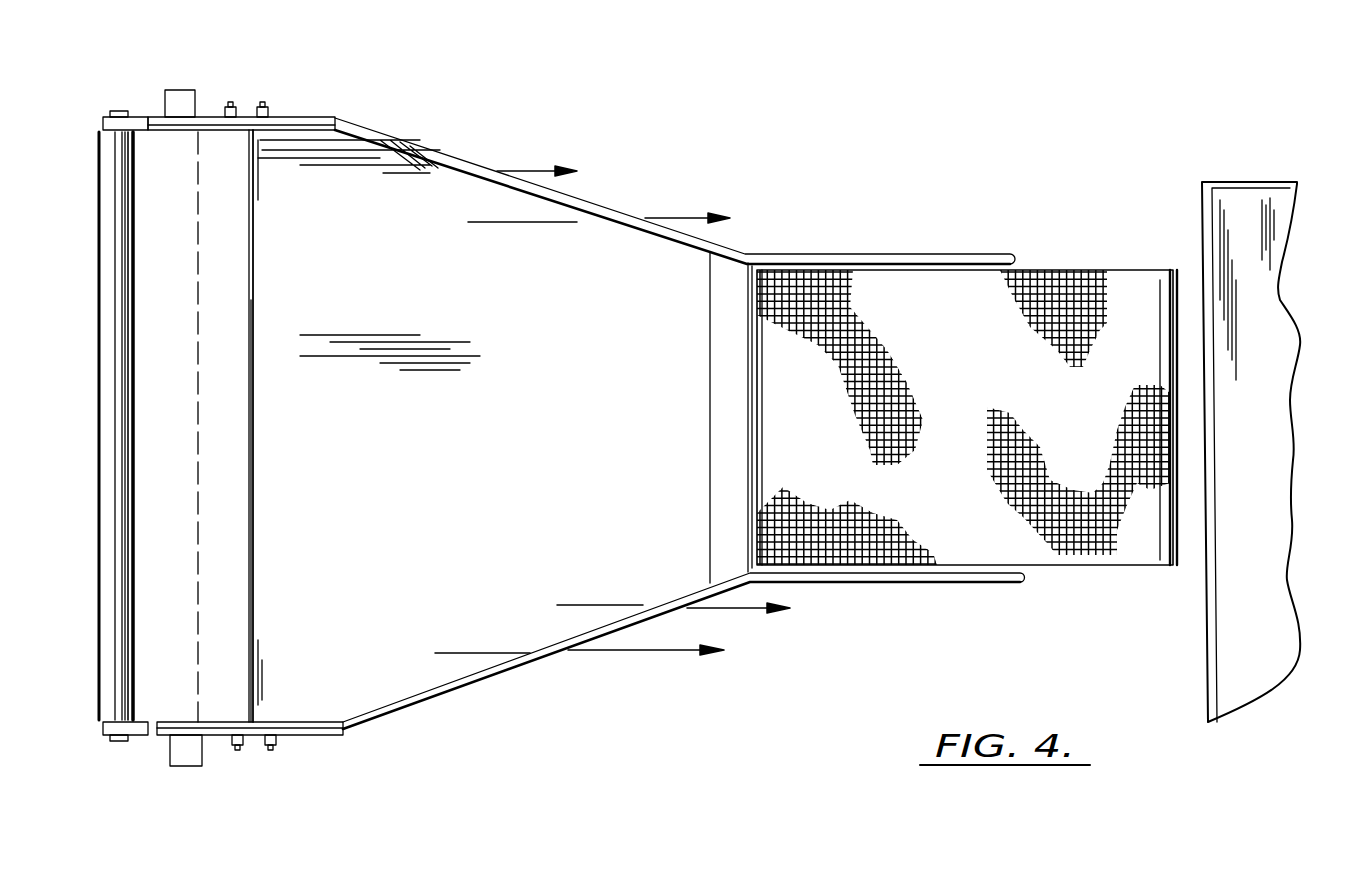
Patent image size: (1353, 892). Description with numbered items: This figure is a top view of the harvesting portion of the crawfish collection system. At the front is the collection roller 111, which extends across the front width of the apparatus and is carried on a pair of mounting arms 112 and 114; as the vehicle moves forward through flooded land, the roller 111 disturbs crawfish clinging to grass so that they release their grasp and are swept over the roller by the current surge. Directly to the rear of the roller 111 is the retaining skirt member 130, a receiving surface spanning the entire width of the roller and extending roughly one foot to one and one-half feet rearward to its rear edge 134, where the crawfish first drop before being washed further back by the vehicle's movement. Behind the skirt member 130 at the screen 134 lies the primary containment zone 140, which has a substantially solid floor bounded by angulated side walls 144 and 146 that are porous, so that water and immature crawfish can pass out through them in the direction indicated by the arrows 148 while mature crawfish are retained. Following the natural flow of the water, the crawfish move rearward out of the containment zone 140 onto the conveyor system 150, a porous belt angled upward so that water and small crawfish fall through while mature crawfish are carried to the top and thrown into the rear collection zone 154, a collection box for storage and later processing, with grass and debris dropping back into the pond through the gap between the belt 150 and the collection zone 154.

The collection roller 111 is at (107, 312).
The mounting arm 112 is at (205, 117).
The mounting arm 114 is at (217, 735).
The retaining skirt member 130 is at (230, 298).
The rear edge 134 is at (255, 478).
The primary containment zone 140 is at (547, 472).
The angulated side wall 144 is at (407, 145).
The angulated side wall 146 is at (495, 667).
The arrows 148 is at (680, 218).
The conveyor system 150 is at (1047, 302).
The rear collection zone 154 is at (1245, 227).